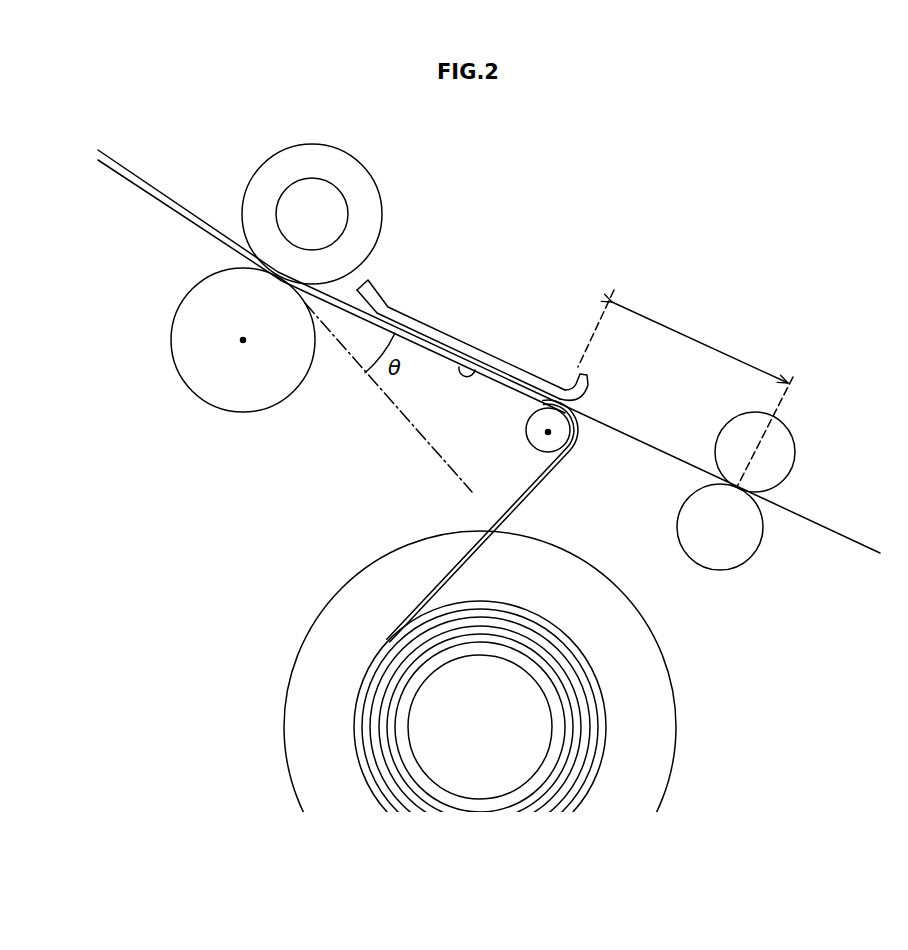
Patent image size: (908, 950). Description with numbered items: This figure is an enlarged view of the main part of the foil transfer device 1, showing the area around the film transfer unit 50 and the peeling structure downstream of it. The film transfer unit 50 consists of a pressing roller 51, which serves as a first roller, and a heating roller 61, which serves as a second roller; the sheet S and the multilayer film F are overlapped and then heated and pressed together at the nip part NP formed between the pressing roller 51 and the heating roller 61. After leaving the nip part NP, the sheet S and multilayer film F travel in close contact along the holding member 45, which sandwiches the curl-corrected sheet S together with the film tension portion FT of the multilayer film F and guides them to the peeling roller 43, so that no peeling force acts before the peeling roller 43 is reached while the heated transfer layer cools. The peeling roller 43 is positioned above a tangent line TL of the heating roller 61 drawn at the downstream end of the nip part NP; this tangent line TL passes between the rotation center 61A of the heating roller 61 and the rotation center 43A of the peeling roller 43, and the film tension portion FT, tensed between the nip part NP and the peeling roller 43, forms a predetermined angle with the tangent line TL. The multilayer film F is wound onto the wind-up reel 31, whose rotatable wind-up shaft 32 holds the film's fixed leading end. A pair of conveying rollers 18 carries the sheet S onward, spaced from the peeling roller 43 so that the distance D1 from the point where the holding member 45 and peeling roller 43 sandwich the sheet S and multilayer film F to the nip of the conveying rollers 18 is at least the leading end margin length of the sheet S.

The foil transfer device 1 is at (645, 185).
The conveying rollers 18 is at (780, 477).
The wind-up reel 31 is at (628, 732).
The wind-up shaft 32 is at (528, 703).
The peeling roller 43 is at (555, 450).
The rotation center of the peeling roller 43A is at (552, 434).
The holding member 45 is at (503, 357).
The film tension portion FT is at (474, 355).
The film transfer unit 50 is at (266, 276).
The pressing roller 51 is at (350, 152).
The heating roller 61 is at (203, 372).
The rotation center of the heating roller 61A is at (243, 342).
The nip part NP is at (268, 283).
The tangent line TL is at (400, 413).
The multilayer film F is at (522, 502).
The sheet S is at (843, 537).
The distance D1 is at (685, 388).